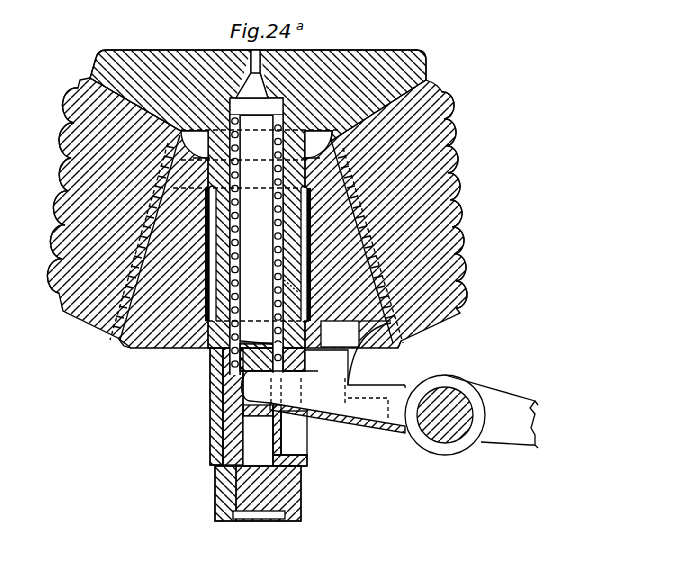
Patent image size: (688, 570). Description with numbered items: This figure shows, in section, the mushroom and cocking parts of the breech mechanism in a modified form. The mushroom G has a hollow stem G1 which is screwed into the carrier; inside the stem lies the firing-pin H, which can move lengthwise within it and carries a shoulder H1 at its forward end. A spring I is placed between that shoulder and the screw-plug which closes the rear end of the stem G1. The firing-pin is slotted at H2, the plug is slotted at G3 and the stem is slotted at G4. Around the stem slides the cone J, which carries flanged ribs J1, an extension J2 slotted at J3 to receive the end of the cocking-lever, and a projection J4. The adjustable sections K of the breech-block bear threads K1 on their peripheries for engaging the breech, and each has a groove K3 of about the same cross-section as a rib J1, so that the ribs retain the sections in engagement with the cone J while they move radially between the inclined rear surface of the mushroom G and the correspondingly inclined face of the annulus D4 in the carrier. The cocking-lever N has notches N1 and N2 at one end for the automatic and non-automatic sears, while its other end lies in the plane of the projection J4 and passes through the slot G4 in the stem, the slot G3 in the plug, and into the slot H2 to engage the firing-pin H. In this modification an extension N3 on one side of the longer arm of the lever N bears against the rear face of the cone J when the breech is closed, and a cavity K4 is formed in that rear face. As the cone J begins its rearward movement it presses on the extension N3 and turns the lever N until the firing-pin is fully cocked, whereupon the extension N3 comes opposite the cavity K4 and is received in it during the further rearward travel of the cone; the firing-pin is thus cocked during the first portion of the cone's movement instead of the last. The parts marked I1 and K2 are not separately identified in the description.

The mushroom G is at (258, 199).
The stem G1 is at (258, 493).
The slot in plug G3 is at (294, 433).
The slot in stem G4 is at (292, 420).
The firing-pin H is at (256, 245).
The shoulder H1 is at (256, 82).
The slot in firing-pin H2 is at (200, 377).
The spring I is at (265, 262).
The spring end I1 is at (291, 287).
The cone J is at (160, 178).
The flanged ribs J1 is at (336, 176).
The extension on cone J2 is at (357, 424).
The slot in extension J3 is at (376, 319).
The projection on cone J4 is at (445, 415).
The adjustable sections K is at (122, 170).
The threads K1 is at (452, 222).
The thread K2 is at (56, 97).
The groove K3 is at (176, 121).
The cavity K4 is at (340, 334).
The cocking-lever N is at (470, 415).
The notch N1 is at (547, 393).
The notch N2 is at (548, 447).
The extension on lever N3 is at (323, 372).
The annulus D4 is at (414, 348).